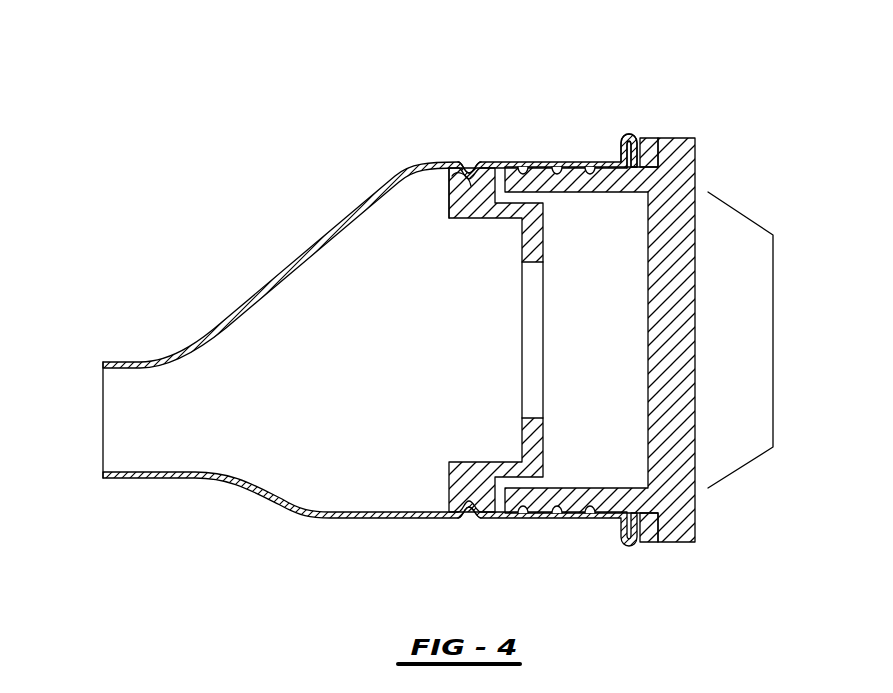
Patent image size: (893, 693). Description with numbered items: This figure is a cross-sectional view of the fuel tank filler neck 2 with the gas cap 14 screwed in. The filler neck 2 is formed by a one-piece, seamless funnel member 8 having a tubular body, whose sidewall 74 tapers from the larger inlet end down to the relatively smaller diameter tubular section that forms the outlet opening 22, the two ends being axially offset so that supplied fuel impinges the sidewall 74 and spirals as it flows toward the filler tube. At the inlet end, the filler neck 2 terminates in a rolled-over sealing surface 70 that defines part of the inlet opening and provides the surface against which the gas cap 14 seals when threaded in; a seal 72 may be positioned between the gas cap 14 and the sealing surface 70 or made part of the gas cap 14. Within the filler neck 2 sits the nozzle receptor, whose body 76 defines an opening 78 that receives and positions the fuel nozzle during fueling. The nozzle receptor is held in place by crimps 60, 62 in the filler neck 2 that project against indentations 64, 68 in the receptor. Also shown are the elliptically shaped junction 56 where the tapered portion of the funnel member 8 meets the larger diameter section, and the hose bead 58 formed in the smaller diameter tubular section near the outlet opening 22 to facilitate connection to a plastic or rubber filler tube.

The filler neck 2 is at (515, 133).
The funnel member 8 is at (353, 518).
The gas cap 14 is at (722, 232).
The outlet opening 22 is at (110, 397).
The elliptically shaped junction 56 is at (543, 519).
The hose bead 58 is at (447, 187).
The crimp 60 is at (477, 166).
The crimp 62 is at (472, 522).
The indentation 64 is at (471, 186).
The indentation 68 is at (454, 462).
The rolled-over sealing surface 70 is at (618, 133).
The seal 72 is at (653, 165).
The sidewall 74 is at (358, 198).
The body 76 is at (487, 210).
The opening 78 is at (532, 316).